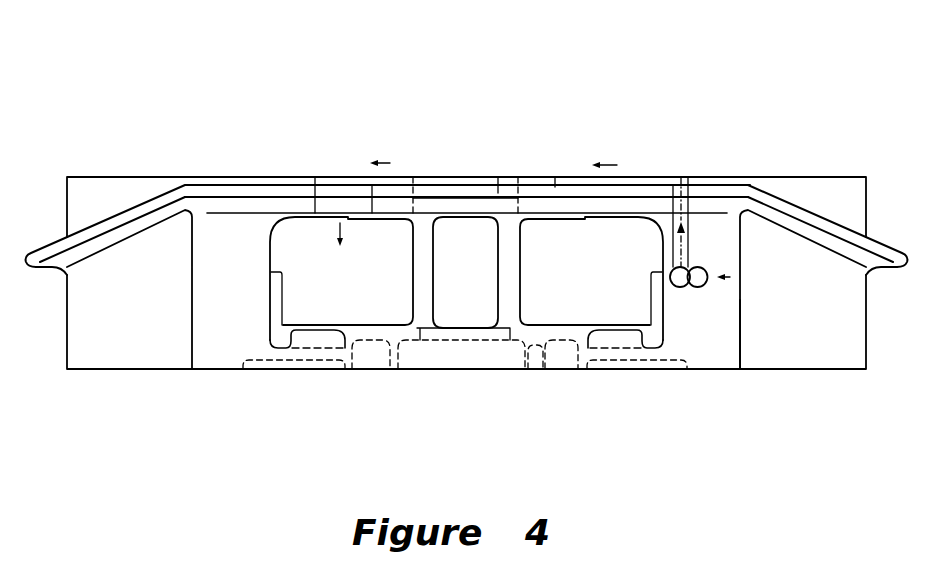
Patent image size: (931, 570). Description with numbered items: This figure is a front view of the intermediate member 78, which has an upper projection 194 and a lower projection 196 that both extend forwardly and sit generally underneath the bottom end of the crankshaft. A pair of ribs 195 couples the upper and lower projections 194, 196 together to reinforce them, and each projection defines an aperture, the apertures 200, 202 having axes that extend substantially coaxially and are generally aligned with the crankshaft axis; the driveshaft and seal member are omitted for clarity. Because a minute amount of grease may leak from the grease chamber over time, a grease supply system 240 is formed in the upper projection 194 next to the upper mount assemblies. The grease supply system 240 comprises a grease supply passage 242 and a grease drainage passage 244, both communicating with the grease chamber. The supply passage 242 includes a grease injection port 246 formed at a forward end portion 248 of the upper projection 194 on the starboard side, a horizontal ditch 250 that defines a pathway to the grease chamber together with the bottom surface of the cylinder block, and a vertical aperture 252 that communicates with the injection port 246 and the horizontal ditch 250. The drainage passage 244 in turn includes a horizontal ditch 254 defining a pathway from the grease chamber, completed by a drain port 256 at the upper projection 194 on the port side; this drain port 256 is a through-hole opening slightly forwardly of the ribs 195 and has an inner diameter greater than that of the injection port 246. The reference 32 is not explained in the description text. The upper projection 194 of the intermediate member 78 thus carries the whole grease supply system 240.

The intermediate member 78 is at (198, 100).
The housing 32 is at (704, 93).
The grease supply system 240 is at (716, 160).
The grease supply passage 242 is at (632, 168).
The grease drainage passage 244 is at (357, 168).
The grease injection port 246 is at (703, 283).
The forward end portion 248 is at (712, 356).
The horizontal ditch 250 is at (555, 180).
The vertical aperture 252 is at (683, 177).
The horizontal ditch 254 is at (404, 176).
The drain port 256 is at (338, 193).
The upper projection 194 is at (500, 193).
The ribs 195 is at (423, 297).
The lower projection 196 is at (393, 331).
The aperture 200 is at (462, 198).
The aperture 202 is at (463, 333).